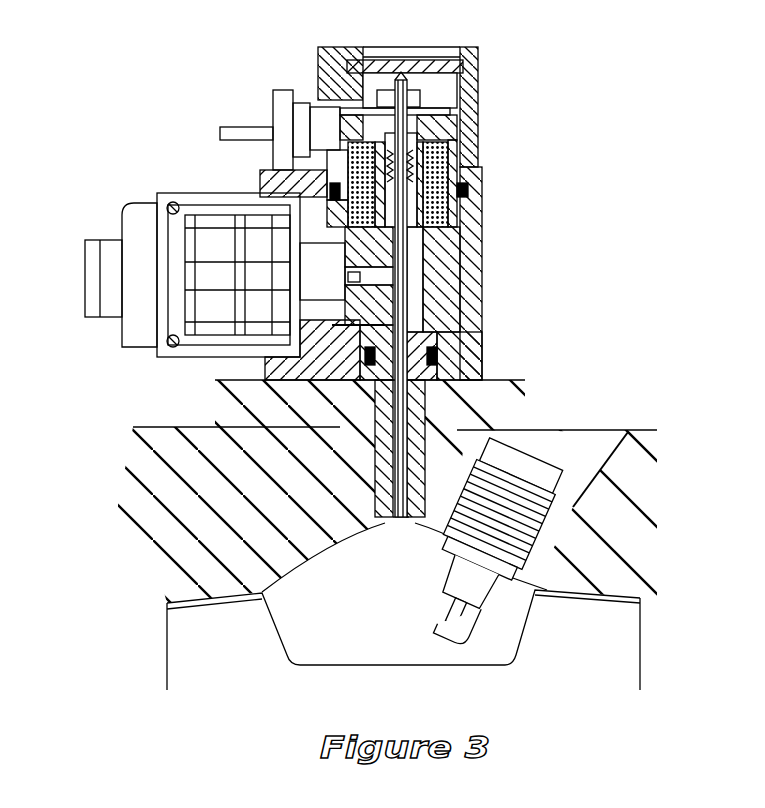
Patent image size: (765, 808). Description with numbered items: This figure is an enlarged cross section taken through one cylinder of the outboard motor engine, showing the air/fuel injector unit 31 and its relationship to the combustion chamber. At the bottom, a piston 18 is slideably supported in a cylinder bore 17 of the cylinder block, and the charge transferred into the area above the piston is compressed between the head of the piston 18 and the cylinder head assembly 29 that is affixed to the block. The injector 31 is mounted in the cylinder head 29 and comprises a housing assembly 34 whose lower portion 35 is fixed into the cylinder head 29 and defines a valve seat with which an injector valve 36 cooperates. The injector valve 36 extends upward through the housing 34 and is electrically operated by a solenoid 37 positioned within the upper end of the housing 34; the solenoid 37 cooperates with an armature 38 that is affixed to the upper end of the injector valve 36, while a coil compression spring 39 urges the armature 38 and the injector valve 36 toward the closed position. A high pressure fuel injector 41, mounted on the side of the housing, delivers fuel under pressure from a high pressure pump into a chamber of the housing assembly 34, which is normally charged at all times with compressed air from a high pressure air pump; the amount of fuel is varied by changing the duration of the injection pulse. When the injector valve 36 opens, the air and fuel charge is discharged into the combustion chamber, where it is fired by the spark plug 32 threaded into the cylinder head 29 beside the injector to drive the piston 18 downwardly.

The cylinder bore 17 is at (172, 656).
The piston 18 is at (287, 645).
The cylinder head assembly 29 is at (512, 380).
The air/fuel injector unit 31 is at (488, 137).
The spark plug 32 is at (527, 540).
The housing assembly 34 is at (488, 325).
The lower portion 35 is at (367, 500).
The injector valve 36 is at (393, 528).
The solenoid 37 is at (470, 148).
The armature 38 is at (473, 112).
The coil compression spring 39 is at (347, 147).
The high pressure fuel injector 41 is at (130, 333).